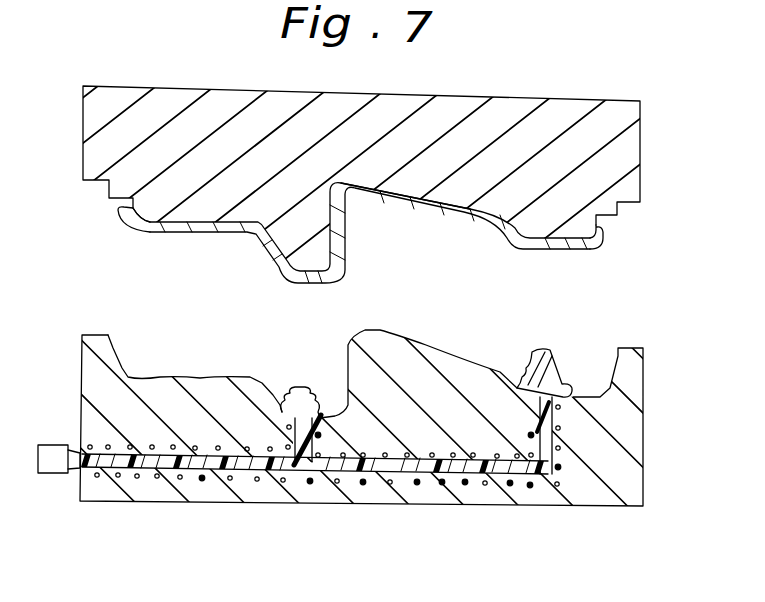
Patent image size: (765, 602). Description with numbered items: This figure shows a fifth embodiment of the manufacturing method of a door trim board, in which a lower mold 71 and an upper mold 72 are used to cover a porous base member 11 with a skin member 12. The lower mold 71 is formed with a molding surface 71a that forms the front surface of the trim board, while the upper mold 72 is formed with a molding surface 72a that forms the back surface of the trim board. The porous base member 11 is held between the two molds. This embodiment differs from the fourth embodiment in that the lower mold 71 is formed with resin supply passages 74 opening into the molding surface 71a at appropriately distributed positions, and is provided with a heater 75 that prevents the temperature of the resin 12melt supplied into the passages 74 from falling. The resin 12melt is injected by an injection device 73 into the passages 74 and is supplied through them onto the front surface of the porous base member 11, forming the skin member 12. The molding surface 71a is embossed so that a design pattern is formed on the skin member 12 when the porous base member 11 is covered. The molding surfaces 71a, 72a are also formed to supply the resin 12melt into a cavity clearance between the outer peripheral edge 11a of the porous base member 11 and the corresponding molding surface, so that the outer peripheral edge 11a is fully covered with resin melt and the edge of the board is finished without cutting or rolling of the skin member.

The upper mold 72 is at (627, 163).
The molding surface 72a is at (441, 206).
The porous base member 11 is at (546, 251).
The outer peripheral edge 11a is at (118, 208).
The lower mold 71 is at (623, 465).
The molding surface 71a is at (210, 358).
The skin member 12 is at (303, 397).
The resin 12melt is at (421, 396).
The injection device 73 is at (50, 453).
The resin supply passages 74 is at (386, 484).
The heater 75 is at (484, 486).